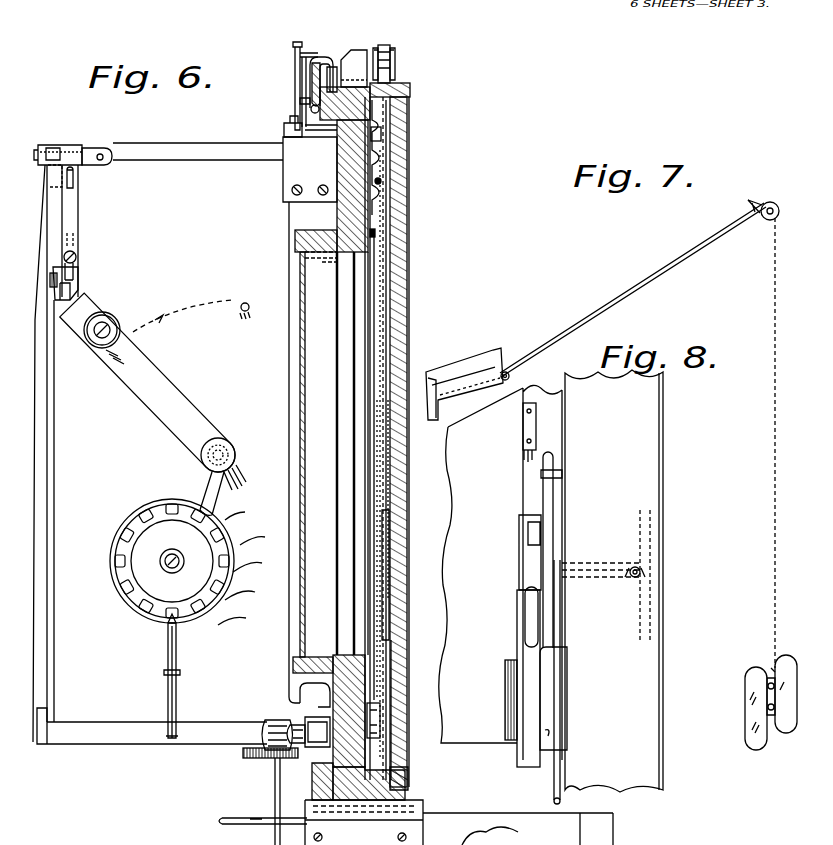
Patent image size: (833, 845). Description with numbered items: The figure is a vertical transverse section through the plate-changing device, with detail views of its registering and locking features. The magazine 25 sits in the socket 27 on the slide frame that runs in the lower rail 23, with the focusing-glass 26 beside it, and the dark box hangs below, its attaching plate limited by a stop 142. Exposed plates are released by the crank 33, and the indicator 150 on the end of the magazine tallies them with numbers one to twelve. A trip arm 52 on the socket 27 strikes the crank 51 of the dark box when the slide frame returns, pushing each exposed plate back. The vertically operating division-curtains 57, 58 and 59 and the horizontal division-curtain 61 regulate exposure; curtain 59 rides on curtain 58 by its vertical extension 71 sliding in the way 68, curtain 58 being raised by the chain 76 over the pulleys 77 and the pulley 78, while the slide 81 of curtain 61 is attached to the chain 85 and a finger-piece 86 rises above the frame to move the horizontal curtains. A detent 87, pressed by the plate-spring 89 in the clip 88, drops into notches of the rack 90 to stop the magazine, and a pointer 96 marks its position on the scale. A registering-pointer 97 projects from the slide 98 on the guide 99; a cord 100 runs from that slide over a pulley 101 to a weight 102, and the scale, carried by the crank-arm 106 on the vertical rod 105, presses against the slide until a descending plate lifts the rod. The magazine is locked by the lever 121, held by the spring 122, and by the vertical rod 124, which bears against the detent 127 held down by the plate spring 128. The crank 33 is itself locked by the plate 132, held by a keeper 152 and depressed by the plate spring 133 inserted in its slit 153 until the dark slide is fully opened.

In FIG. 6, the keeper 152 is at (75, 138).
In FIG. 6, the plate spring 133 is at (55, 182).
In FIG. 6, the slit 153 is at (70, 182).
In FIG. 6, the plate 132 is at (80, 215).
In FIG. 6, the crank 33 is at (138, 388).
In FIG. 6, the indicator 150 is at (137, 562).
In FIG. 6, the focusing-glass 26 is at (300, 410).
In FIG. 6, the chain 76 is at (383, 140).
In FIG. 6, the slide 81 is at (385, 170).
In FIG. 6, the chain 85 is at (382, 181).
In FIG. 6, the division-curtain 57 is at (385, 272).
In FIG. 6, the socket 27 is at (368, 300).
In FIG. 6, the division-curtain 61 is at (374, 347).
In FIG. 6, the way 68 is at (389, 485).
In FIG. 6, the vertical extension 71 is at (383, 558).
In FIG. 6, the division-curtain 58 is at (385, 607).
In FIG. 6, the division-curtain 59 is at (392, 680).
In FIG. 6, the pulley 78 is at (380, 733).
In FIG. 6, the clip 88 is at (323, 700).
In FIG. 6, the plate-spring 89 is at (305, 717).
In FIG. 6, the detent 87 is at (255, 757).
In FIG. 6, the trip arm 52 is at (276, 781).
In FIG. 6, the crank 51 is at (230, 818).
In FIG. 6, the rack 90 is at (325, 790).
In FIG. 6, the lower rail 23 is at (345, 798).
In FIG. 6, the stop 142 is at (459, 822).
In FIG. 6, the pointer 96 is at (295, 50).
In FIG. 8, the pointer 96 is at (526, 427).
In FIG. 6, the registering-pointer 97 is at (295, 70).
In FIG. 7, the registering-pointer 97 is at (447, 367).
In FIG. 6, the slide 98 is at (330, 62).
In FIG. 7, the slide 98 is at (498, 350).
In FIG. 6, the guide 99 is at (314, 56).
In FIG. 6, the finger-piece 86 is at (357, 56).
In FIG. 6, the pulley 77 is at (396, 52).
In FIG. 6, the vertical rod 124 is at (290, 126).
In FIG. 8, the vertical rod 124 is at (540, 765).
In FIG. 7, the cord 100 is at (609, 298).
In FIG. 7, the pulley 101 is at (785, 192).
In FIG. 7, the weight 102 is at (745, 693).
In FIG. 8, the magazine 25 is at (551, 581).
In FIG. 8, the spring 122 is at (562, 482).
In FIG. 8, the lever 121 is at (526, 542).
In FIG. 8, the crank-arm 106 is at (616, 580).
In FIG. 8, the vertical rod 105 is at (668, 575).
In FIG. 8, the plate spring 128 is at (562, 638).
In FIG. 8, the detent 127 is at (579, 757).